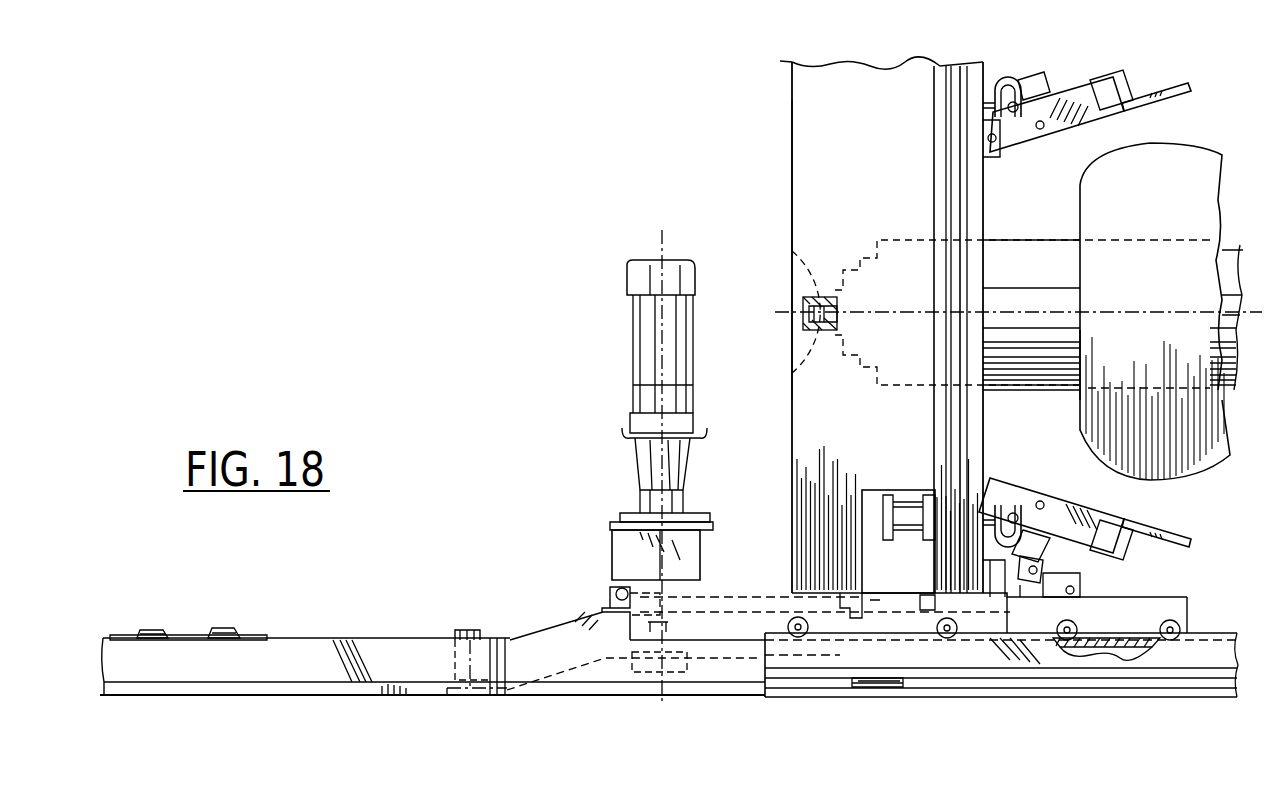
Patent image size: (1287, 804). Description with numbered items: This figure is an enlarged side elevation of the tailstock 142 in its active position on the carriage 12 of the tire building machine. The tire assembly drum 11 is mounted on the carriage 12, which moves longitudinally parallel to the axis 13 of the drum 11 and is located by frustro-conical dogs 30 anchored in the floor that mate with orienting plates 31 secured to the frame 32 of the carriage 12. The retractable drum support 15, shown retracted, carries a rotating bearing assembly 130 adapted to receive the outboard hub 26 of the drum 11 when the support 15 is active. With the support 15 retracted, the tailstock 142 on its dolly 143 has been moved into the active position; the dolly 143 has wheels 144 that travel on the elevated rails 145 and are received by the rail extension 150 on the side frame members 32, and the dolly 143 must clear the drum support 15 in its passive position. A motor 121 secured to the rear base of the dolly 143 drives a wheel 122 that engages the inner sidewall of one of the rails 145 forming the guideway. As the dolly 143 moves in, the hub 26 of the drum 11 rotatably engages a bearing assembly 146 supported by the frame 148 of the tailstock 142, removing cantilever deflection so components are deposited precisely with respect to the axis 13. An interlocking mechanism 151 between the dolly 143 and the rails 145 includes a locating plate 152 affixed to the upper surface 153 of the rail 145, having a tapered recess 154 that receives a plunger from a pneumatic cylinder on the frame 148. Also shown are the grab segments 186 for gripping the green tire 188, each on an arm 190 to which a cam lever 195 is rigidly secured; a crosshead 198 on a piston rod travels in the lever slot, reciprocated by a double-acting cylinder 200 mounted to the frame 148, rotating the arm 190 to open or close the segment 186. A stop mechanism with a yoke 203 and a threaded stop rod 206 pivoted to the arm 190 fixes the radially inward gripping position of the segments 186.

The tire assembly drum 11 is at (1238, 264).
The carriage 12 is at (1238, 630).
The axis 13 is at (1250, 312).
The retractable drum support 15 is at (573, 616).
The outboard hub 26 is at (806, 348).
The frustro-conical dogs 30 is at (880, 686).
The orienting plates 31 is at (905, 678).
The frame 32 is at (1224, 653).
The motor 121 is at (642, 344).
The wheel 122 is at (662, 705).
The rotating bearing assembly 130 is at (462, 630).
The tailstock 142 is at (758, 128).
The dolly 143 is at (1160, 605).
The wheels 144 is at (1162, 627).
The elevated rails 145 is at (400, 640).
The bearing assembly 146 is at (790, 253).
The frame 148 is at (802, 180).
The rail extension 150 is at (1107, 650).
The interlocking mechanism 151 is at (140, 619).
The locating plate 152 is at (250, 630).
The upper surface 153 is at (292, 638).
The tapered recess 154 is at (170, 636).
The grab segments 186 is at (1182, 80).
The green tire 188 is at (1210, 162).
The arm 190 is at (1080, 100).
The cam lever 195 is at (1008, 78).
The crosshead 198 is at (1023, 112).
The double-acting cylinder 200 is at (905, 527).
The yoke 203 is at (1046, 572).
The threaded stop rod 206 is at (1037, 88).